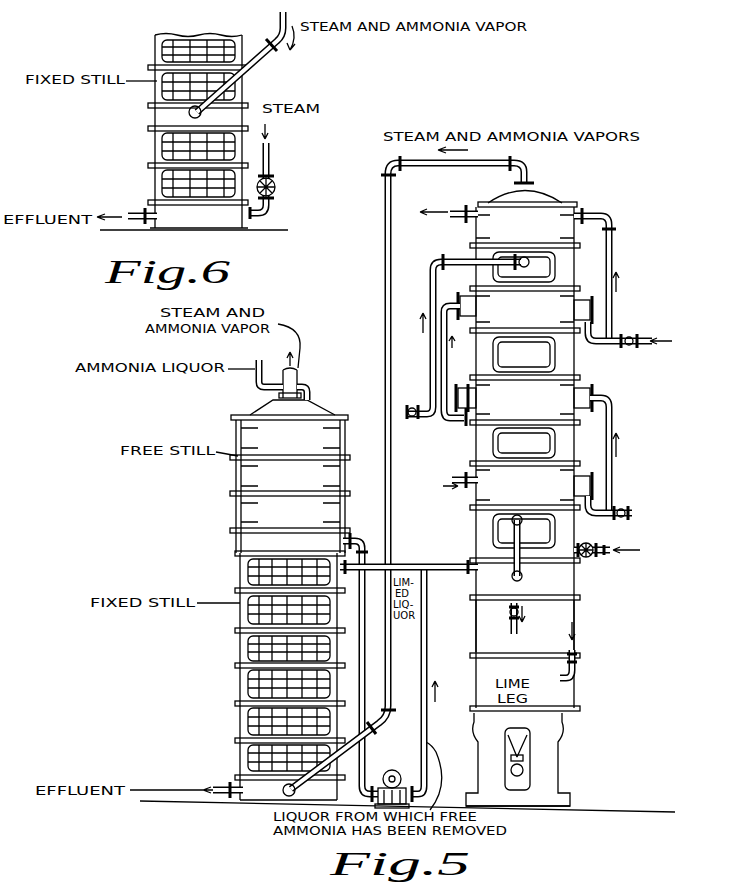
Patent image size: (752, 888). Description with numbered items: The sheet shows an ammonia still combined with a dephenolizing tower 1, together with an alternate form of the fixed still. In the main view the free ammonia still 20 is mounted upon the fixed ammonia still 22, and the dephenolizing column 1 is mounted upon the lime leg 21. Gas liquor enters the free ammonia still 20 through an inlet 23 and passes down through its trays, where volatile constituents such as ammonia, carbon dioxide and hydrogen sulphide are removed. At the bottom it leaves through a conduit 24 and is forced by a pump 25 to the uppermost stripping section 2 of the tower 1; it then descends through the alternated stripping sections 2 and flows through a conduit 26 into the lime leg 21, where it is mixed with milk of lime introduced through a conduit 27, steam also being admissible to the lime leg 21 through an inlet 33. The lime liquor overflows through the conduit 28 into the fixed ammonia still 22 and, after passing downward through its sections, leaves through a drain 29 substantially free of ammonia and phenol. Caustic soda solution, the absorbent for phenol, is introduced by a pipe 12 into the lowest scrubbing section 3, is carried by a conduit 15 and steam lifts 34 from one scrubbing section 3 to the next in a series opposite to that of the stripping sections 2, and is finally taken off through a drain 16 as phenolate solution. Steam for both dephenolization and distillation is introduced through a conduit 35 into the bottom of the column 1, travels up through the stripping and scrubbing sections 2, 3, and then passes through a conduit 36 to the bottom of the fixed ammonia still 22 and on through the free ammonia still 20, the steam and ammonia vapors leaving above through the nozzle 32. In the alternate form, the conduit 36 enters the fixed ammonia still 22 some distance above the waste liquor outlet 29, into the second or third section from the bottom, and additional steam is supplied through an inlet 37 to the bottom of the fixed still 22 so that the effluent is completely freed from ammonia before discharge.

In FIG. 5, the dephenolizing tower 1 is at (657, 382).
In FIG. 5, the stripping section 2 is at (480, 273).
In FIG. 5, the scrubbing section 3 is at (478, 243).
In FIG. 5, the pipe 12 is at (460, 466).
In FIG. 5, the conduit 15 is at (447, 334).
In FIG. 5, the drain 16 is at (462, 194).
In FIG. 5, the free ammonia still 20 is at (250, 474).
In FIG. 5, the lime leg 21 is at (556, 606).
In FIG. 6, the fixed ammonia still 22 is at (163, 146).
In FIG. 5, the fixed ammonia still 22 is at (248, 648).
In FIG. 5, the inlet 23 is at (268, 372).
In FIG. 5, the conduit 24 is at (359, 540).
In FIG. 5, the pump 25 is at (392, 771).
In FIG. 5, the conduit 26 is at (524, 572).
In FIG. 5, the conduit 27 is at (520, 629).
In FIG. 5, the conduit 28 is at (440, 573).
In FIG. 6, the drain 29 is at (140, 208).
In FIG. 5, the drain 29 is at (226, 787).
In FIG. 5, the vapor outlet nozzle 32 is at (298, 376).
In FIG. 5, the inlet 33 is at (576, 680).
In FIG. 5, the steam lift 34 is at (630, 336).
In FIG. 5, the conduit 35 is at (600, 558).
In FIG. 6, the conduit 36 is at (272, 50).
In FIG. 5, the conduit 36 is at (522, 166).
In FIG. 6, the inlet 37 is at (270, 214).